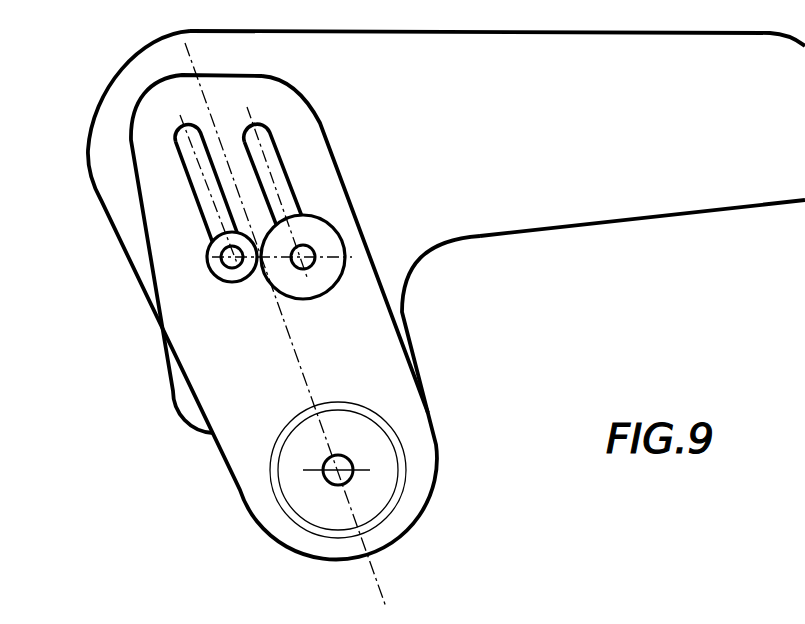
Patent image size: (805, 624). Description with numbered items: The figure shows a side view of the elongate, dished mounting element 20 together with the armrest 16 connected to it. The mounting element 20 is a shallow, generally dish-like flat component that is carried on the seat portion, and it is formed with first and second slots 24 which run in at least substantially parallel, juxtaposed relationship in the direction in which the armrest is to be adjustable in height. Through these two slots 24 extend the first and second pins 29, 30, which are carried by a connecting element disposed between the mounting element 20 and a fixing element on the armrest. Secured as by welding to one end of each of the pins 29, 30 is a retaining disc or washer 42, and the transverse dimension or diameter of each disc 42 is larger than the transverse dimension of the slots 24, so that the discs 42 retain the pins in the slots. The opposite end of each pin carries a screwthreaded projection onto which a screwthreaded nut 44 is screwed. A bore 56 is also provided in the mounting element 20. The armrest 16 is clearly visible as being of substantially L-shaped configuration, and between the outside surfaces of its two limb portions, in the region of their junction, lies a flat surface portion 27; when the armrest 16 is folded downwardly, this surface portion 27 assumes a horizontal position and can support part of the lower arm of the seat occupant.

The armrest 16 is at (652, 165).
The mounting element 20 is at (268, 512).
The slots 24 is at (188, 178).
The flat surface portion 27 is at (124, 76).
The first pin 29 is at (240, 267).
The second pin 30 is at (298, 269).
The disc or washer 42 is at (323, 272).
The screwthreaded nut 44 is at (232, 273).
The bore 56 is at (354, 473).